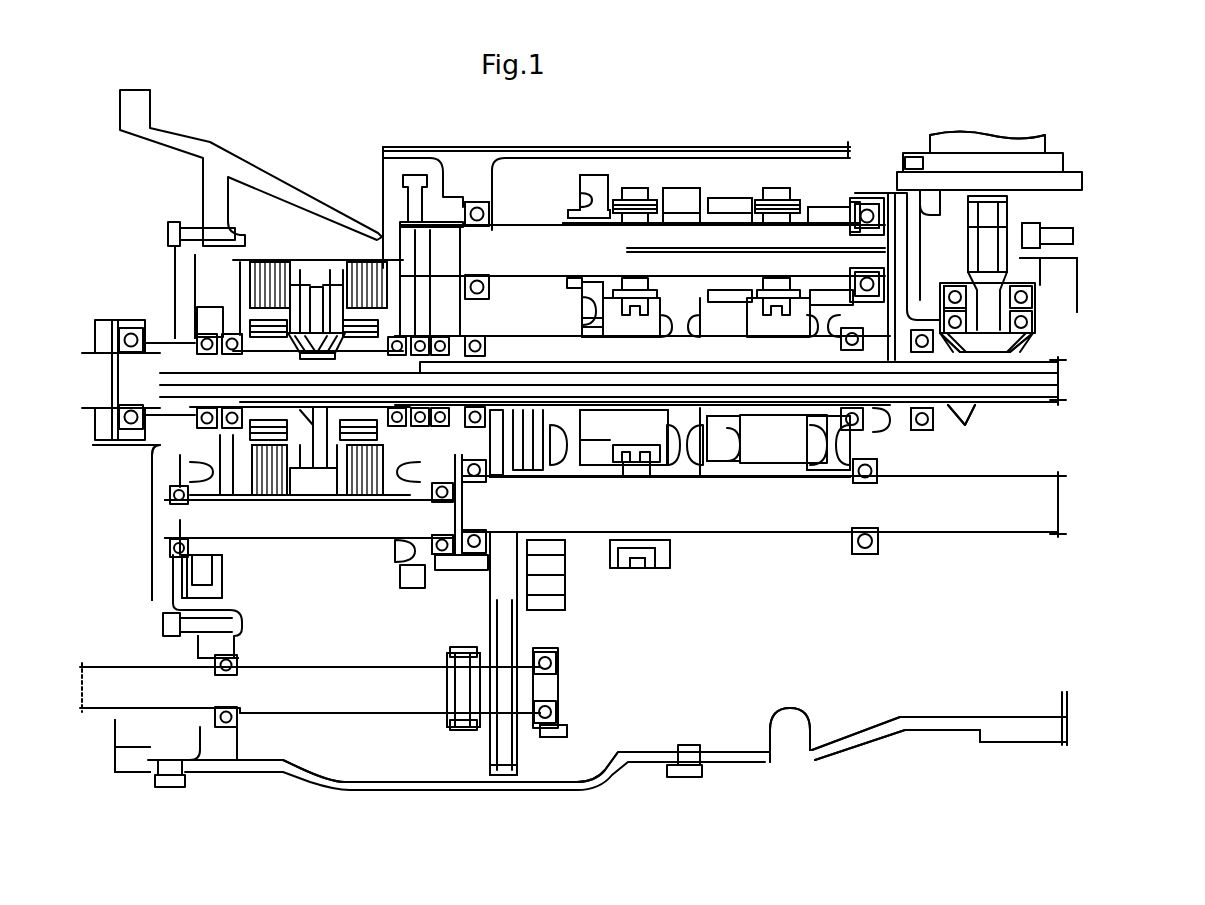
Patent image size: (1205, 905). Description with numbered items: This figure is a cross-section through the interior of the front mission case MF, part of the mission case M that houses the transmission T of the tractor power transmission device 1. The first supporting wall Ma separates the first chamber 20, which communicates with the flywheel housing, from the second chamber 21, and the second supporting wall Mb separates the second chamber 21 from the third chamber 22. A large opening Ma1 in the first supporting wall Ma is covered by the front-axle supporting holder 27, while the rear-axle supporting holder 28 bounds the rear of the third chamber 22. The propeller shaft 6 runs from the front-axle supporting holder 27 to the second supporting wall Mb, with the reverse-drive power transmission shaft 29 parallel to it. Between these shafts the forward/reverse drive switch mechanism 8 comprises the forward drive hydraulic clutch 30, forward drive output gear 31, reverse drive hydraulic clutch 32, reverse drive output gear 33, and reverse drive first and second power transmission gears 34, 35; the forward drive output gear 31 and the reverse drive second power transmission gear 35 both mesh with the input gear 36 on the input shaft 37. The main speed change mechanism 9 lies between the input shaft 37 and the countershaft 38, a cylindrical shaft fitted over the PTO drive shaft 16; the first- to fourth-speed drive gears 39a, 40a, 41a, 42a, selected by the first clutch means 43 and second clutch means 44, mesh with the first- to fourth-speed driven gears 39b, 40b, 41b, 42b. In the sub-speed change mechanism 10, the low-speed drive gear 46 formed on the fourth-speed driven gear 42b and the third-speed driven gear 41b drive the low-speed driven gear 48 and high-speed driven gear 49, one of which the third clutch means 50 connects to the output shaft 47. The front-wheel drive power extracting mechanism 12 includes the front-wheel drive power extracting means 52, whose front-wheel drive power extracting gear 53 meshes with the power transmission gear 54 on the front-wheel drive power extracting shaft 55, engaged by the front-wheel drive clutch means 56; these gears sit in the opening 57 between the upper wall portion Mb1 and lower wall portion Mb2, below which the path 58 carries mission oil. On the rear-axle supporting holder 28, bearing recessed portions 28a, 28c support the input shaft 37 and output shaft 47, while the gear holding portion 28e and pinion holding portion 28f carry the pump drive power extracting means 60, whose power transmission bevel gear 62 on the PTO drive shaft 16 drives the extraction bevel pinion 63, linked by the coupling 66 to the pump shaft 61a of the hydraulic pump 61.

The power transmission device 1 is at (447, 106).
The propeller shaft 6 is at (90, 392).
The forward/reverse drive switch mechanism 8 is at (291, 197).
The main speed change mechanism 9 is at (727, 158).
The sub-speed change mechanism 10 is at (720, 635).
The front-wheel drive power extracting mechanism 12 is at (484, 775).
The PTO drive shaft 16 is at (1042, 398).
The first chamber 20 is at (145, 740).
The second chamber 21 is at (350, 755).
The third chamber 22 is at (576, 765).
The front-axle supporting holder 27 is at (180, 568).
The rear-axle supporting holder 28 is at (885, 440).
The bearing recessed portion 28a is at (868, 205).
The bearing recessed portion 28c is at (880, 544).
The gear holding portion 28e is at (920, 438).
The pinion holding portion 28f is at (1078, 315).
The reverse-drive power transmission shaft 29 is at (183, 520).
The forward drive hydraulic clutch 30 is at (358, 268).
The forward drive output gear 31 is at (412, 300).
The reverse drive hydraulic clutch 32 is at (263, 262).
The reverse drive output gear 33 is at (210, 305).
The reverse drive first power transmission gear 34 is at (212, 583).
The reverse drive second power transmission gear 35 is at (405, 558).
The input gear 36 is at (418, 176).
The input shaft 37 is at (535, 232).
The countershaft 38 is at (505, 334).
The first-speed drive gear 39a is at (822, 205).
The first-speed driven gear 39b is at (833, 457).
The second-speed drive gear 40a is at (730, 197).
The second-speed driven gear 40b is at (745, 440).
The third-speed drive gear 41a is at (688, 190).
The third-speed driven gear 41b is at (688, 455).
The fourth-speed drive gear 42a is at (595, 185).
The fourth-speed driven gear 42b is at (584, 336).
The first clutch means 43 is at (786, 172).
The second clutch means 44 is at (642, 170).
The low-speed drive gear 46 is at (528, 322).
The output shaft 47 is at (1027, 520).
The low-speed driven gear 48 is at (556, 604).
The high-speed driven gear 49 is at (685, 568).
The third clutch means 50 is at (641, 594).
The front-wheel drive power extracting means 52 is at (530, 775).
The front-wheel drive power extracting gear 53 is at (525, 632).
The power transmission gear 54 is at (508, 782).
The front-wheel drive power extracting shaft 55 is at (392, 700).
The front-wheel drive clutch means 56 is at (460, 742).
The opening 57 is at (545, 655).
The path 58 is at (563, 757).
The pump drive power extracting means 60 is at (975, 420).
The hydraulic pump 61 is at (1066, 155).
The pump shaft 61a is at (1000, 218).
The power transmission bevel gear 62 is at (940, 418).
The extraction bevel pinion 63 is at (1050, 345).
The coupling 66 is at (1070, 246).
The first supporting wall Ma is at (237, 642).
The opening Ma1 is at (205, 246).
The second supporting wall Mb is at (395, 605).
The upper wall portion Mb1 is at (460, 590).
The lower wall portion Mb2 is at (500, 630).
The mission case M is at (970, 748).
The front mission case MF is at (880, 735).
The transmission T is at (828, 716).